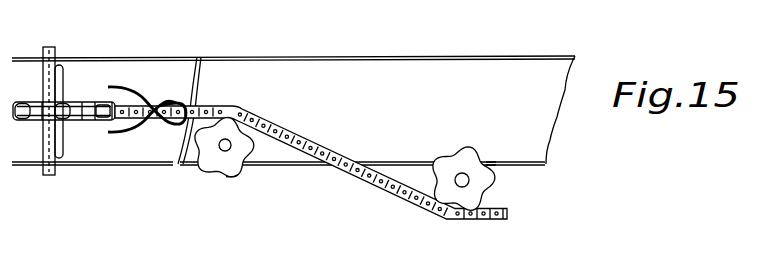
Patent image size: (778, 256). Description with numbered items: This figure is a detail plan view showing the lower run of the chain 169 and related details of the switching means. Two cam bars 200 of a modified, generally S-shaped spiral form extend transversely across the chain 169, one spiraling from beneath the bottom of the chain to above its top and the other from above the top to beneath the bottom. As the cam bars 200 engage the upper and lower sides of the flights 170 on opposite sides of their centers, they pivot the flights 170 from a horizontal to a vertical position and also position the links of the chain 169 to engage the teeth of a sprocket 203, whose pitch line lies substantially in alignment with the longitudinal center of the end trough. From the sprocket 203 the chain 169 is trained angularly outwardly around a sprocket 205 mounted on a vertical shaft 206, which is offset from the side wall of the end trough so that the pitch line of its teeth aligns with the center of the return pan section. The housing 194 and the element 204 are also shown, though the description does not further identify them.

The flight 170 is at (73, 68).
The cam bar 200 is at (133, 86).
The housing 194 is at (338, 42).
The chain 169 is at (332, 122).
The sprocket 204 is at (222, 148).
The sprocket 203 is at (232, 177).
The sprocket 205 is at (472, 130).
The vertical shaft 206 is at (490, 162).